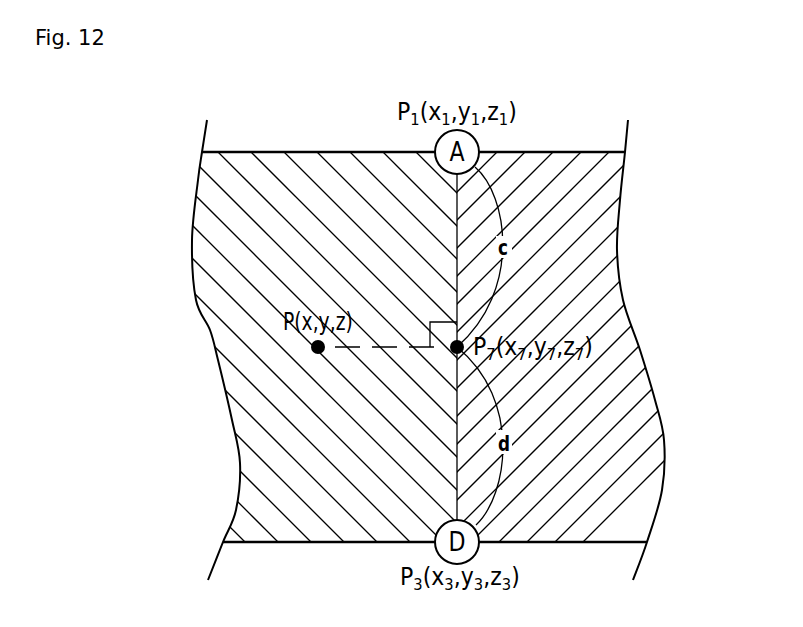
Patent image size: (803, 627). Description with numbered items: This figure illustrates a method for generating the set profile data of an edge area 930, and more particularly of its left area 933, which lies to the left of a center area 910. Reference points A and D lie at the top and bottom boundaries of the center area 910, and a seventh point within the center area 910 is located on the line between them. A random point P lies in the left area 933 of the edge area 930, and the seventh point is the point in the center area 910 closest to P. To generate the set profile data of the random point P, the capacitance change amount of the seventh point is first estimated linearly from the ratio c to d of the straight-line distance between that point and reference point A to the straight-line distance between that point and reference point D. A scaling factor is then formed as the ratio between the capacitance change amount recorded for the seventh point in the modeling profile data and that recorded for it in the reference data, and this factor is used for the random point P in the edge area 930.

The center area 910 is at (603, 283).
The edge area 930 is at (401, 350).
The left area 933 is at (236, 373).